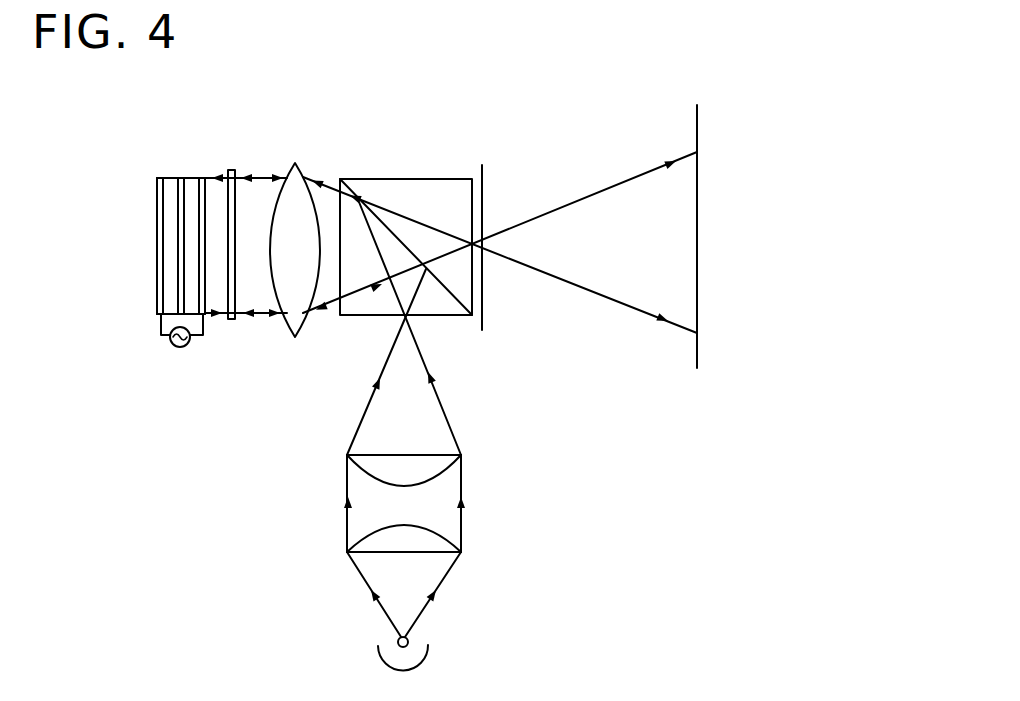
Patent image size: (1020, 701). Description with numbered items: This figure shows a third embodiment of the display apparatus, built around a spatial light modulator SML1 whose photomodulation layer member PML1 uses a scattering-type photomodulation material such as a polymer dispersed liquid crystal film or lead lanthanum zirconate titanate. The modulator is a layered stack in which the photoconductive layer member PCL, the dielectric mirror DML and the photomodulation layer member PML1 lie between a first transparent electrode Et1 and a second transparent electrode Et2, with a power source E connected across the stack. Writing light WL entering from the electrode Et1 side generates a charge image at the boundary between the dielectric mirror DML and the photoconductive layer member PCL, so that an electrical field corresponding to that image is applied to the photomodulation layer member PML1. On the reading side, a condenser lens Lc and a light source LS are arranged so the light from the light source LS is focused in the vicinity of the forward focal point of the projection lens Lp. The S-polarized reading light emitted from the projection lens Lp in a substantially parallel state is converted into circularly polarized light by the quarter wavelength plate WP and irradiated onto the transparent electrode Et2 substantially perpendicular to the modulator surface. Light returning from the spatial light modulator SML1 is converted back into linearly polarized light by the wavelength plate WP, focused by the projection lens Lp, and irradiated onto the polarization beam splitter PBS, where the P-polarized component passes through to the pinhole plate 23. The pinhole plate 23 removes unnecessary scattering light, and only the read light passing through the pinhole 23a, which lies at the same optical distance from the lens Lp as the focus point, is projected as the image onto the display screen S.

The spatial light modulator SML1 is at (150, 197).
The photoconductive layer member PCL is at (168, 177).
The dielectric mirror DML is at (178, 176).
The photomodulation layer member PML1 is at (189, 177).
The transparent electrode Et2 is at (204, 177).
The transparent electrode Et1 is at (157, 285).
The power source E is at (171, 345).
The writing light WL is at (128, 244).
The 1/4 wavelength plate WP is at (232, 170).
The projection lens Lp is at (299, 166).
The polarization beam splitter PBS is at (410, 179).
The pinhole plate 23 is at (483, 173).
The pinhole 23a is at (483, 237).
The display screen S is at (702, 128).
The condenser lens Lc is at (471, 433).
The light source LS is at (378, 650).